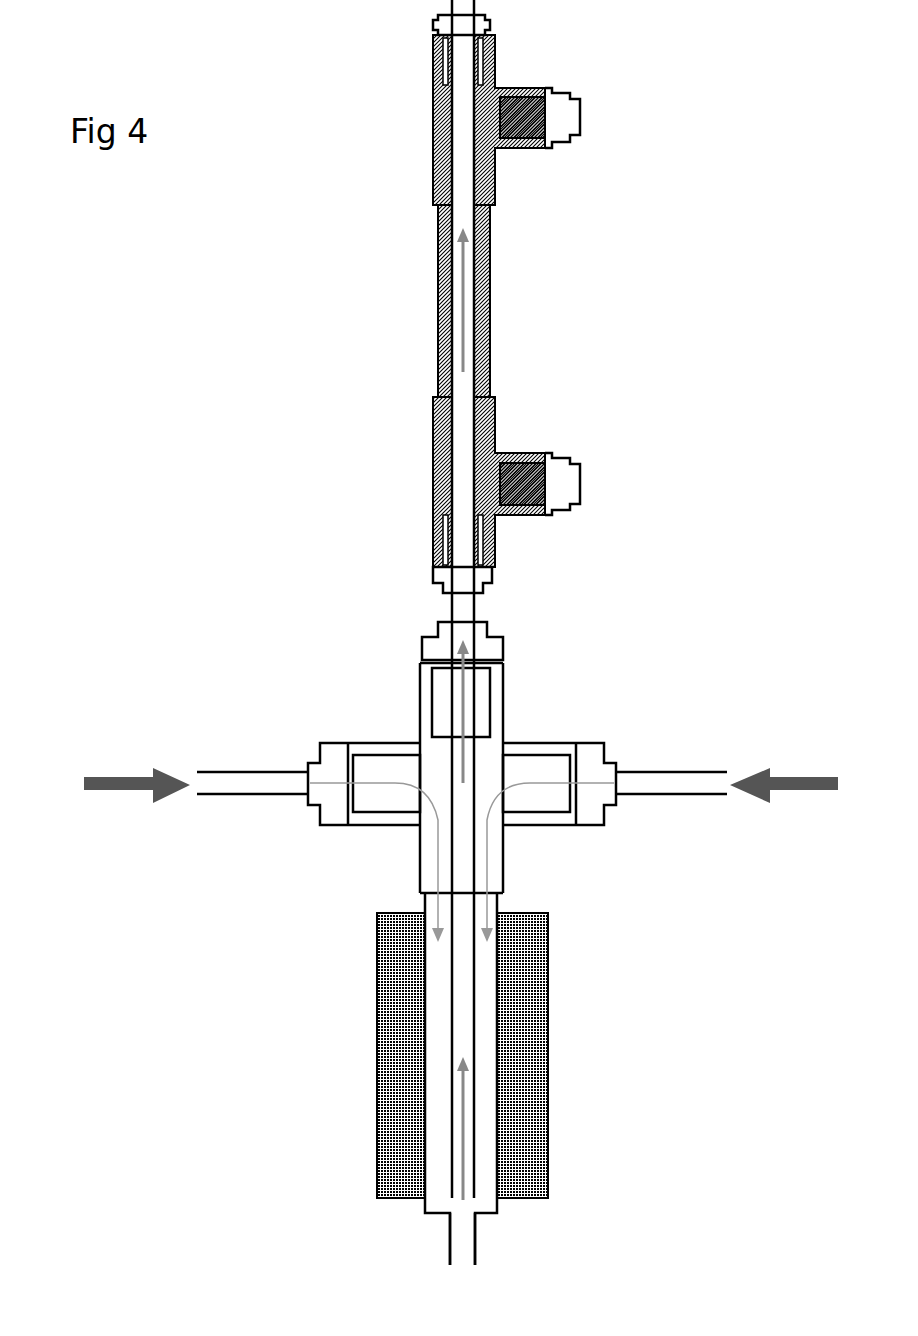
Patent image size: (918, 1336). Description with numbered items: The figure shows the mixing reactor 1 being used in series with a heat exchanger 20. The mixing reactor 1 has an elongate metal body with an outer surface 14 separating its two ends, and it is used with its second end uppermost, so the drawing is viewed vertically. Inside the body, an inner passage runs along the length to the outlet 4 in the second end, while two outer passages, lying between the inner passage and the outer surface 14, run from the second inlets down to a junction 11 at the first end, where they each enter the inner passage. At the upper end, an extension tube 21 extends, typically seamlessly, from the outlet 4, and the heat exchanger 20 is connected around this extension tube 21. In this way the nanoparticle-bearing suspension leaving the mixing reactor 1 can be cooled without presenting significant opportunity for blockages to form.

The mixing reactor 1 is at (390, 1200).
The outlet 4 is at (435, 630).
The junction 11 is at (587, 1100).
The outer surface 14 is at (225, 912).
The heat exchanger 20 is at (650, 275).
The extension tube 21 is at (450, 604).